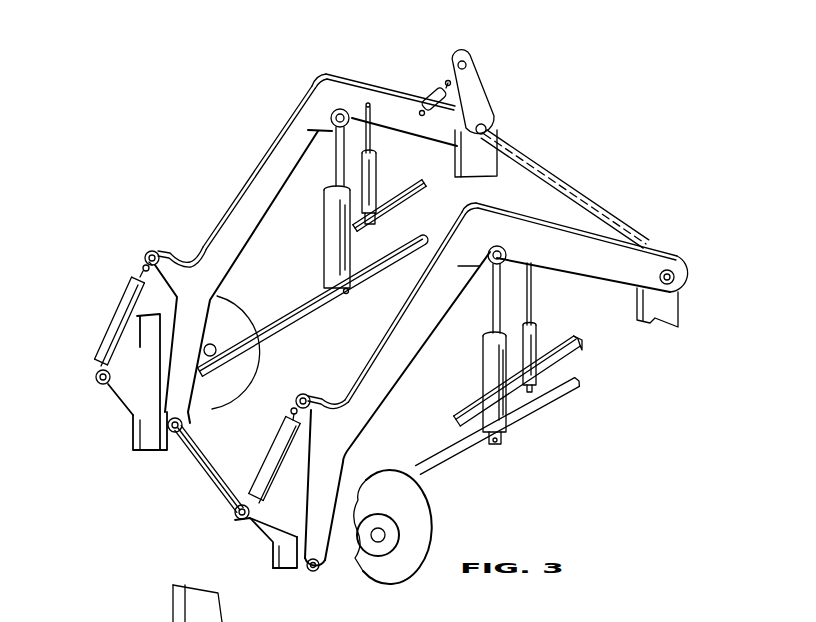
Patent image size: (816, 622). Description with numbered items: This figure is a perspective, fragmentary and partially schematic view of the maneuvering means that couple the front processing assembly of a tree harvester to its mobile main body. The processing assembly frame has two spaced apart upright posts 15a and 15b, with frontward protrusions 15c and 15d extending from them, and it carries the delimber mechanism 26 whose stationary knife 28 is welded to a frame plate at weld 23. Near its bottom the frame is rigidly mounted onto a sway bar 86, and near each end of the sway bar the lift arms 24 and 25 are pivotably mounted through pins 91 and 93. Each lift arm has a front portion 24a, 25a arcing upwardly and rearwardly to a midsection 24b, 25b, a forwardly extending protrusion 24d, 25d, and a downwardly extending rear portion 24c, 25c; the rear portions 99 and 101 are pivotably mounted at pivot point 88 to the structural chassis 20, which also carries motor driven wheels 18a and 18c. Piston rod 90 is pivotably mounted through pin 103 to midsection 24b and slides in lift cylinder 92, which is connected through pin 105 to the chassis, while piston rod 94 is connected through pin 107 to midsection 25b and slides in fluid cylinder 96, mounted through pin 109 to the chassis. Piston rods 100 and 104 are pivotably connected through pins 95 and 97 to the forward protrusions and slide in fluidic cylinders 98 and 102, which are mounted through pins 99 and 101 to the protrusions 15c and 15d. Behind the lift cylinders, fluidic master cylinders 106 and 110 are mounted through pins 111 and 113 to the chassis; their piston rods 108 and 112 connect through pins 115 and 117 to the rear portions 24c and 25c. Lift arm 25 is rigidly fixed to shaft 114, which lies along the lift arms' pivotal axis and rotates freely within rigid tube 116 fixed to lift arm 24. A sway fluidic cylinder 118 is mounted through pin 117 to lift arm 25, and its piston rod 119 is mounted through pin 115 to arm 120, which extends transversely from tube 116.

The upright post 15a is at (285, 561).
The upright post 15b is at (150, 452).
The frontward protrusion 15c is at (252, 528).
The frontward protrusion 15d is at (110, 395).
The motor driven wheel 18a is at (400, 585).
The motor driven wheel 18c is at (240, 306).
The structural chassis 20 is at (396, 204).
The weld 23 is at (187, 621).
The lift arm 24 is at (362, 420).
The front portion 24a is at (368, 378).
The midsection 24b is at (467, 207).
The rear portion 24c is at (530, 225).
The forwardly extending protrusion 24d is at (323, 398).
The lift arm 25 is at (240, 215).
The front portion 25a is at (267, 155).
The midsection 25b is at (319, 72).
The rear portion 25c is at (393, 90).
The forwardly extending protrusion 25d is at (163, 250).
The delimber mechanism 26 is at (26, 612).
The stationary knife 28 is at (173, 621).
The sway bar 86 is at (222, 470).
The pivot point 88 is at (678, 285).
The piston rod 90 is at (493, 306).
The pin 91 is at (184, 426).
The lift cylinder 92 is at (483, 372).
The pin 93 is at (320, 575).
The piston rod 94 is at (336, 170).
The pin 95 is at (300, 393).
The fluid cylinder 96 is at (325, 252).
The pin 97 is at (148, 251).
The fluidic cylinder 98 is at (270, 470).
The pin 99 is at (236, 513).
The piston rod 100 is at (291, 409).
The pin 101 is at (95, 378).
The fluidic cylinder 102 is at (100, 335).
The pin 103 is at (492, 250).
The piston rod 104 is at (141, 271).
The pin 105 is at (505, 445).
The fluidic master cylinder 106 is at (538, 323).
The pin 107 is at (330, 112).
The piston rod 108 is at (533, 288).
The pin 109 is at (347, 295).
The fluidic master cylinder 110 is at (377, 163).
The pin 111 is at (581, 391).
The piston rod 112 is at (372, 144).
The pin 113 is at (373, 225).
The shaft 114 is at (548, 150).
The pin 115 is at (467, 62).
The rigid tube 116 is at (505, 142).
The pin 117 is at (367, 104).
The sway fluidic cylinder 118 is at (430, 91).
The piston rod 119 is at (447, 80).
The arm 120 is at (480, 92).